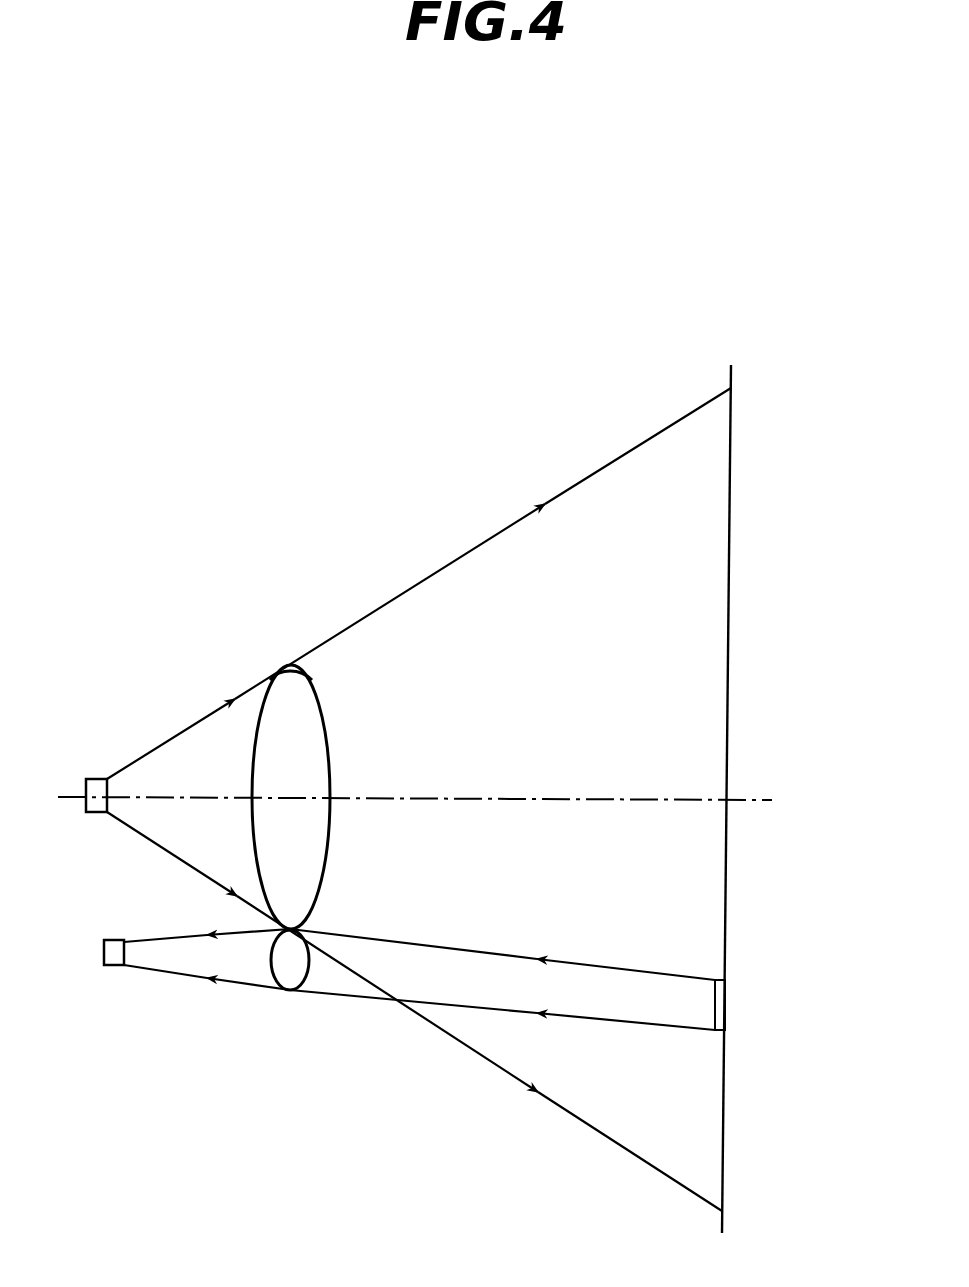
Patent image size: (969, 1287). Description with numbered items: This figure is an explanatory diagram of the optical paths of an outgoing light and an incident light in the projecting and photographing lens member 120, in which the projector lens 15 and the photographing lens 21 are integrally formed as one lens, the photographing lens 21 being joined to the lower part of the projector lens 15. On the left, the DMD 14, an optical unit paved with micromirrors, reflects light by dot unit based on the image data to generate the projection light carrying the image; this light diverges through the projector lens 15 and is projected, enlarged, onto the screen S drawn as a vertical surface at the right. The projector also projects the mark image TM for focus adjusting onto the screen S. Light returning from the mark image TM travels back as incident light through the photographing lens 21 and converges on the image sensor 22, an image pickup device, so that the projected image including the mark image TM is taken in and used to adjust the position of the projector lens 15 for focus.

The DMD 14 is at (97, 777).
The projector lens 15 is at (333, 740).
The projecting and photographing lens member 120 is at (285, 658).
The photographing lens 21 is at (288, 993).
The image sensor 22 is at (112, 968).
The screen S is at (730, 777).
The mark image TM is at (727, 1003).